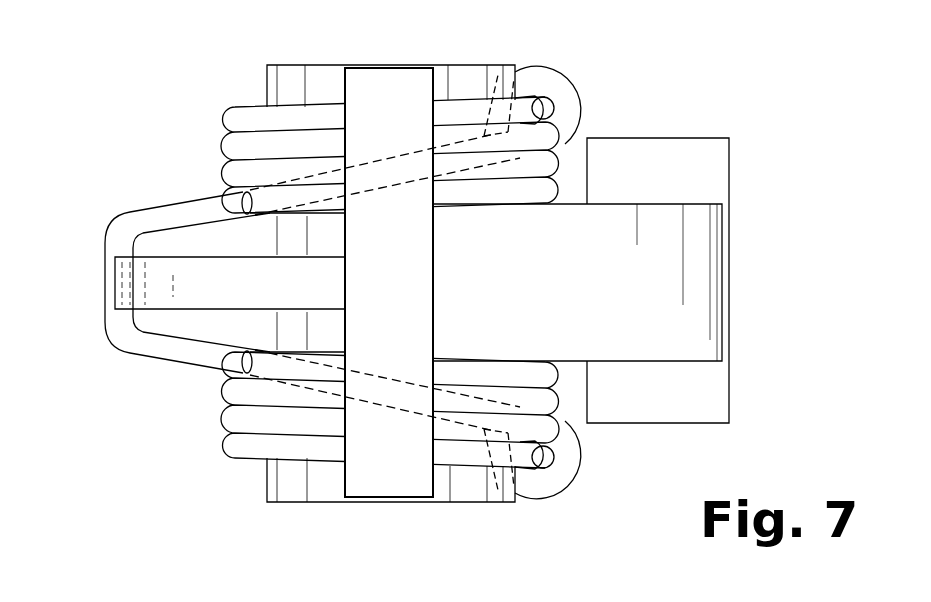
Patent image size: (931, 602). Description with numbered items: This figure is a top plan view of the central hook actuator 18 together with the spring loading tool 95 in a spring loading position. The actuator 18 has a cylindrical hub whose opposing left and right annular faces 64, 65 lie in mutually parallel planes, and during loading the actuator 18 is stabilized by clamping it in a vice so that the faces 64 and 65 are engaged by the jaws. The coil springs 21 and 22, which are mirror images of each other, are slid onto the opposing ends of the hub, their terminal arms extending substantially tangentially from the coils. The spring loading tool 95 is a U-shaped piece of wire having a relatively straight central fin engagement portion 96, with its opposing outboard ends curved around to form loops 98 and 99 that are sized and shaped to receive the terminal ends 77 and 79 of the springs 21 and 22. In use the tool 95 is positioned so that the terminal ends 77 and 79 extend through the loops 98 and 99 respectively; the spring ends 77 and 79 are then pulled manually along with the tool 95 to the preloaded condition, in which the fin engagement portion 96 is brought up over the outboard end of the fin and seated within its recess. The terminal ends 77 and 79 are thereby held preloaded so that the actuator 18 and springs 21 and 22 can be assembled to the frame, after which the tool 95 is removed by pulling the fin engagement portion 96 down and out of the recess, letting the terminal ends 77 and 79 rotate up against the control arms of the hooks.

The central hook actuator 18 is at (697, 135).
The coil spring 21 is at (230, 468).
The coil spring 22 is at (221, 103).
The left annular face 64 is at (477, 503).
The right annular face 65 is at (450, 65).
The terminal end 77 is at (556, 453).
The terminal end 79 is at (556, 109).
The spring loading tool 95 is at (116, 357).
The fin engagement portion 96 is at (105, 285).
The loop 98 is at (580, 480).
The loop 99 is at (580, 84).